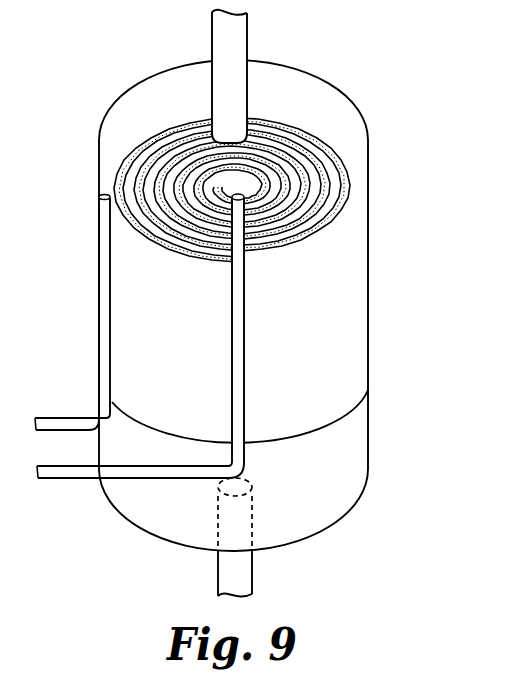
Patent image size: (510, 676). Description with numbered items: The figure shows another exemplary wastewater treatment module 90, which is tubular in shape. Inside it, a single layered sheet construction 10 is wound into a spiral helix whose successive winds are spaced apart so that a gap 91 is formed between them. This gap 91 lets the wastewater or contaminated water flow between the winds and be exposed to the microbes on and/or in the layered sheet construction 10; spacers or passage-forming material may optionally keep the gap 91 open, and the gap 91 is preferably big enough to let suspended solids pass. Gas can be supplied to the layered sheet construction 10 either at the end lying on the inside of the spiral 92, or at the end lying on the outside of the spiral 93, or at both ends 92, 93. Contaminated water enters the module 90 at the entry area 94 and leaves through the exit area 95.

The wastewater treatment module 90 is at (243, 303).
The layered sheet construction 10 is at (355, 298).
The gap 91 is at (287, 204).
The inside end of the spiral 92 is at (300, 447).
The outside end of the spiral 93 is at (100, 333).
The contaminated water entry area 94 is at (240, 578).
The exit area 95 is at (243, 30).